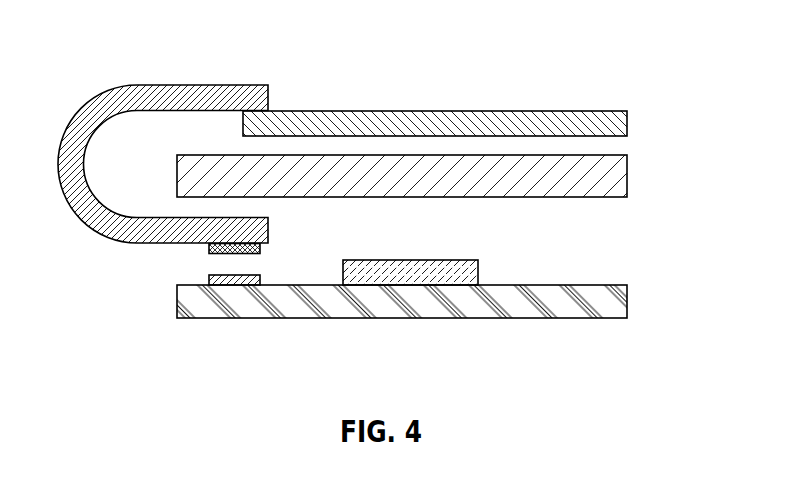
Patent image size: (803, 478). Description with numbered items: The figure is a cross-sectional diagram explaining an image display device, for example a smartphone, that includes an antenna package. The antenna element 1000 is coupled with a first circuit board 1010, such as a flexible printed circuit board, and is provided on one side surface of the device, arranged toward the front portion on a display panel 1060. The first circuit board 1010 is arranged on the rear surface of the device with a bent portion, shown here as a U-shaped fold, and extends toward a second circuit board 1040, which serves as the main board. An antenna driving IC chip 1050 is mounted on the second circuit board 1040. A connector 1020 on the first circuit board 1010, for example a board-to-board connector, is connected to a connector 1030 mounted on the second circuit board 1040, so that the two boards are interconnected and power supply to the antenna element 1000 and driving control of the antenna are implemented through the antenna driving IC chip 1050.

The antenna element 1000 is at (626, 124).
The first circuit board 1010 is at (197, 90).
The connector 1020 is at (210, 257).
The connector 1030 is at (238, 285).
The second circuit board 1040 is at (619, 300).
The antenna driving IC chip 1050 is at (478, 263).
The display panel 1060 is at (623, 175).